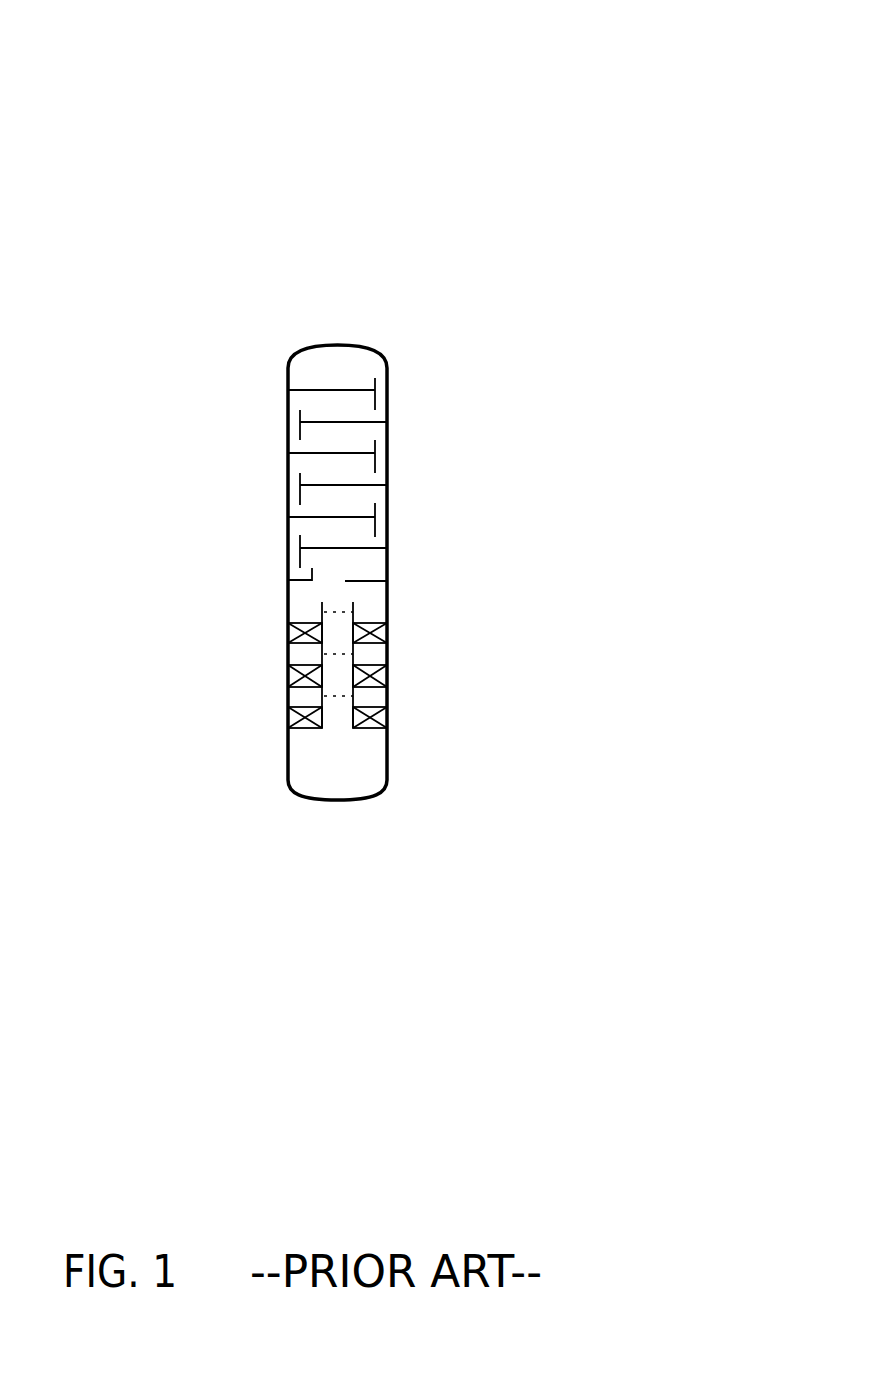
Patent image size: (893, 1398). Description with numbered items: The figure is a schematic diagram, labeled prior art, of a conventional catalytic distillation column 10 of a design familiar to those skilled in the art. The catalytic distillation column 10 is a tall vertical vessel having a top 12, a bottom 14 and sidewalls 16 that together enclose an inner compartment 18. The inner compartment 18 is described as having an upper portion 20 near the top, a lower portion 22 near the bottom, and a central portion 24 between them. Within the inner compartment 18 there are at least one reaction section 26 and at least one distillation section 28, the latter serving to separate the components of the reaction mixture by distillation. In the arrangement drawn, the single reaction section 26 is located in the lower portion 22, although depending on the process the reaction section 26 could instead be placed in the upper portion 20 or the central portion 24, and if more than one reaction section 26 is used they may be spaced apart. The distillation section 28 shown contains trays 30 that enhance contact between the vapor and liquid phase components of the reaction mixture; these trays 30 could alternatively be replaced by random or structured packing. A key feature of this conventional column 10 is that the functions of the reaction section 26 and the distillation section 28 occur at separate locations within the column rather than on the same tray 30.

The catalytic distillation column 10 is at (447, 555).
The top 12 is at (347, 340).
The bottom 14 is at (347, 802).
The sidewalls 16 is at (288, 595).
The inner compartment 18 is at (387, 581).
The upper portion 20 is at (330, 383).
The lower portion 22 is at (302, 768).
The central portion 24 is at (323, 565).
The reaction section 26 is at (402, 595).
The distillation section 28 is at (402, 572).
The trays 30 is at (365, 452).